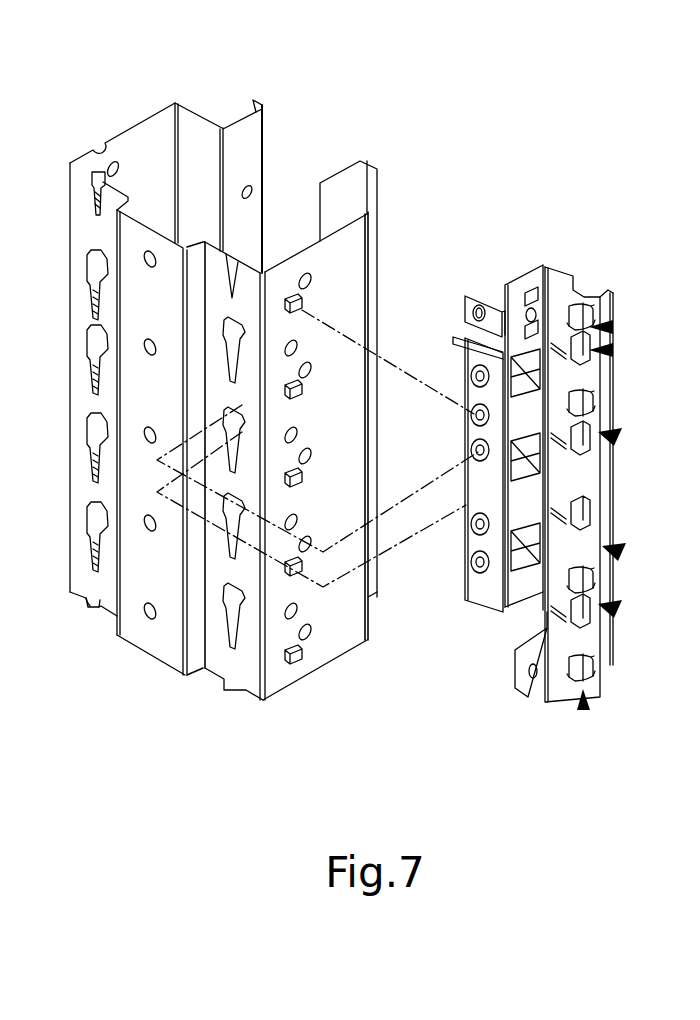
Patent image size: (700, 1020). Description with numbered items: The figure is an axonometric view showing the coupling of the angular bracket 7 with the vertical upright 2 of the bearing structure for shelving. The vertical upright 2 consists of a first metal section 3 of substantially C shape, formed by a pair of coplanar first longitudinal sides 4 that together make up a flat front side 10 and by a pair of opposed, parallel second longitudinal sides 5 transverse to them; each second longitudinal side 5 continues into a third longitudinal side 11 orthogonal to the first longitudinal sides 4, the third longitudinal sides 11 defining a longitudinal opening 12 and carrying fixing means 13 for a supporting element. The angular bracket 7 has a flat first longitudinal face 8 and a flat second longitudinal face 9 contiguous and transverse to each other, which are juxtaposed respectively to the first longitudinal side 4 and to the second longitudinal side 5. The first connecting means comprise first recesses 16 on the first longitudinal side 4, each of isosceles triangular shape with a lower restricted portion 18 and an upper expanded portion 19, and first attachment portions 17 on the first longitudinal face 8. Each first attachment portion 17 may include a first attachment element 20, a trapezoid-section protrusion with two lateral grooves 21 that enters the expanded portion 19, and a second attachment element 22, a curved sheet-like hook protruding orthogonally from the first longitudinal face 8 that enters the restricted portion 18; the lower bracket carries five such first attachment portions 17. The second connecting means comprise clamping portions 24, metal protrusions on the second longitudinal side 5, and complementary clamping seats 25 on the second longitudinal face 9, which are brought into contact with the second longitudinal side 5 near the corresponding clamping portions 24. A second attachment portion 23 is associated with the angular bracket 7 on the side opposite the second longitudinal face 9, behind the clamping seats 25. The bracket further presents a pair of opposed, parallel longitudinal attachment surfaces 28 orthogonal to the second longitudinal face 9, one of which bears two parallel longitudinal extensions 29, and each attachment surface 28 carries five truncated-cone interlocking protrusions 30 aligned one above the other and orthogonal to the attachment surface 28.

The vertical upright 2 is at (88, 128).
The first metal section 3 is at (70, 318).
The first longitudinal side 4 is at (82, 593).
The second longitudinal side 5 is at (148, 150).
The angular bracket 7 is at (622, 283).
The first longitudinal face 8 is at (585, 490).
The second longitudinal face 9 is at (520, 603).
The front side 10 is at (170, 648).
The third longitudinal side 11 is at (246, 148).
The longitudinal opening 12 is at (262, 112).
The fixing means 13 is at (252, 192).
The first recess 16 is at (92, 280).
The first attachment portion 17 is at (613, 350).
The restricted portion 18 is at (95, 208).
The expanded portion 19 is at (92, 607).
The first attachment element 20 is at (580, 302).
The lateral groove 21 is at (597, 295).
The second attachment element 22 is at (600, 358).
The second attachment portion 23 is at (497, 292).
The clamping portion 24 is at (302, 308).
The clamping seat 25 is at (470, 370).
The attachment surface 28 is at (470, 445).
The longitudinal extension 29 is at (468, 340).
The interlocking protrusion 30 is at (470, 378).